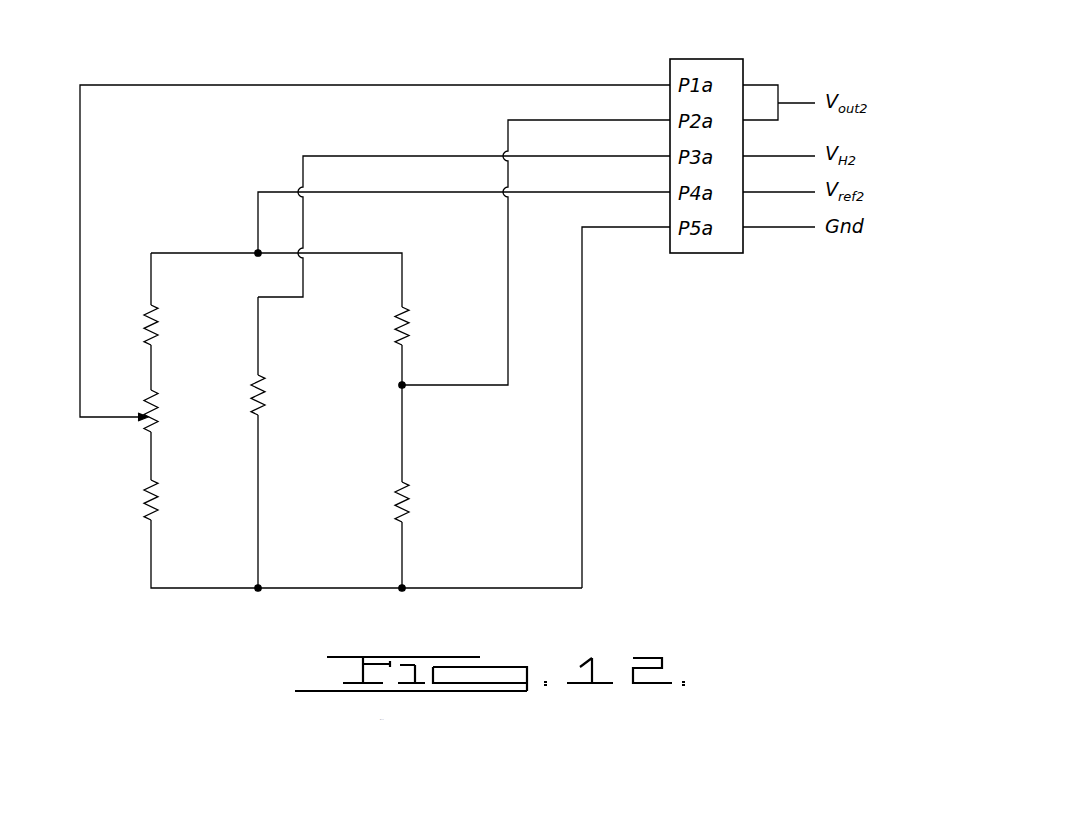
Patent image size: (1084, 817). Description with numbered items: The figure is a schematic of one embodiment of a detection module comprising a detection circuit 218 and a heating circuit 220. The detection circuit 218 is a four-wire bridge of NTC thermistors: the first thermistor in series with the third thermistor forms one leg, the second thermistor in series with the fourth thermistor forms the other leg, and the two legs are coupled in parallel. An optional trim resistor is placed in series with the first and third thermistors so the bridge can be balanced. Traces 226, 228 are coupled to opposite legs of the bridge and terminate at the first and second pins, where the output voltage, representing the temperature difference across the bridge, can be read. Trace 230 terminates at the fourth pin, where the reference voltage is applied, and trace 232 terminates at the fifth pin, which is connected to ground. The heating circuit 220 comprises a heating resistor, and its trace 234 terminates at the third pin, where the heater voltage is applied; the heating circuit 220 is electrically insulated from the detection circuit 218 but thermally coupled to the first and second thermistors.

The detection circuit 218 is at (190, 612).
The heating circuit 220 is at (279, 367).
The trace 226 is at (437, 85).
The trace 228 is at (488, 385).
The trace 230 is at (258, 226).
The trace 232 is at (582, 385).
The trace 234 is at (330, 157).